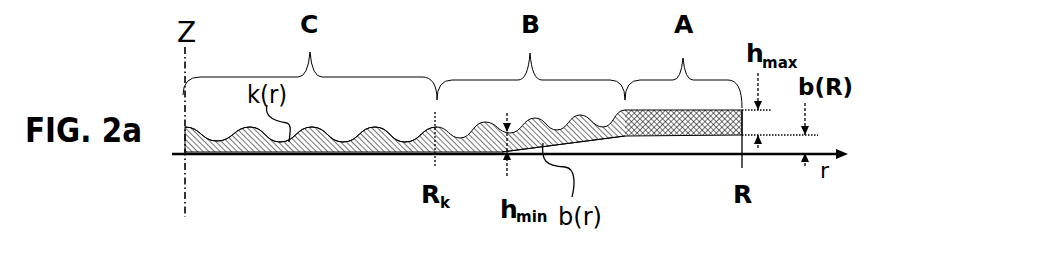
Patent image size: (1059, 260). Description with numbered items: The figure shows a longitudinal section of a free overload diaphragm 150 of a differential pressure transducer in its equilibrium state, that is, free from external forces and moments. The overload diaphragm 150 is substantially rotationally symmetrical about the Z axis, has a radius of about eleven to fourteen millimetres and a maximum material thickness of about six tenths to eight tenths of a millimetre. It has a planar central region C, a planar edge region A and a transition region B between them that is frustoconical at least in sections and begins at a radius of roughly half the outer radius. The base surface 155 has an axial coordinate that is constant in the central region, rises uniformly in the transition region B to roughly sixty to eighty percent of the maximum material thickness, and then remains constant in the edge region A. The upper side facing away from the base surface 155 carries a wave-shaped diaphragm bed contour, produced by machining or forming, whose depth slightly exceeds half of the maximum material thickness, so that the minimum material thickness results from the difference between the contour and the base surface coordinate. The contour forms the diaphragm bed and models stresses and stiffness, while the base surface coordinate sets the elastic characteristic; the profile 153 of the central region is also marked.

The overload diaphragm 150 is at (315, 163).
The protrusions (ribs) in region C 153 is at (343, 142).
The base surface 155 is at (588, 136).